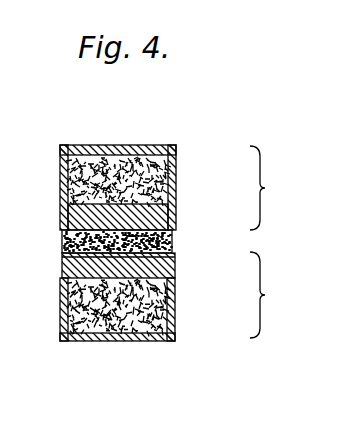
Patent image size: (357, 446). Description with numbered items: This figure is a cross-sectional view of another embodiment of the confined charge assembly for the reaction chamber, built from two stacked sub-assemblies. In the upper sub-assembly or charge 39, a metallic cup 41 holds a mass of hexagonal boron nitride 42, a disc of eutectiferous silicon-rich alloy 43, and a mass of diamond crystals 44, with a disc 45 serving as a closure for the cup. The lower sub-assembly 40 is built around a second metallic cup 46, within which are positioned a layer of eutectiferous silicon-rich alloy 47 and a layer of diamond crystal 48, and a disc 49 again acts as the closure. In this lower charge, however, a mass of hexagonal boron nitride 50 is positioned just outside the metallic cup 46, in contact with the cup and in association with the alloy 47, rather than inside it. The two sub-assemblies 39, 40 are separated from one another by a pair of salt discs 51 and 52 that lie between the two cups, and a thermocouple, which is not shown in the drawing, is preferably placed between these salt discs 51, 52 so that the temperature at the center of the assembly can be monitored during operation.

The sub-assembly 39 is at (280, 188).
The sub-assembly 40 is at (280, 295).
The metallic cup 41 is at (173, 163).
The mass of hexagonal boron nitride 42 is at (172, 221).
The disc of eutectiferous silicon-rich alloy 43 is at (60, 213).
The mass of diamond crystals 44 is at (150, 182).
The disc 45 is at (125, 145).
The metallic cup 46 is at (172, 335).
The layer of eutectiferous silicon-rich alloy 47 is at (62, 268).
The layer of diamond crystal 48 is at (150, 302).
The disc 49 is at (122, 341).
The mass of hexagonal boron nitride 50 is at (62, 243).
The salt disc 51 is at (176, 240).
The salt disc 52 is at (176, 256).